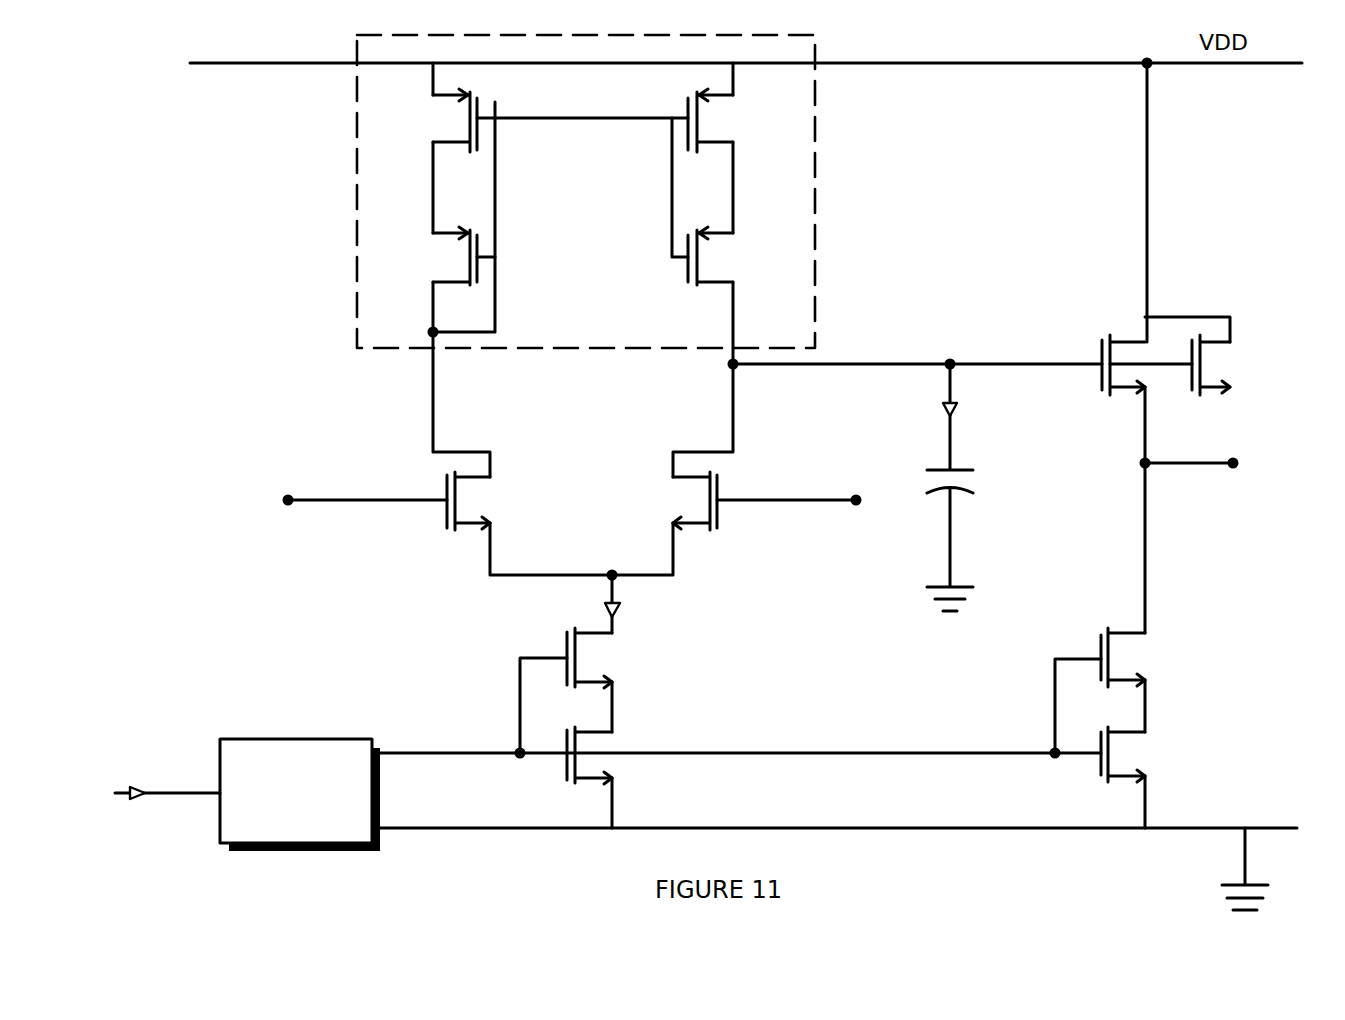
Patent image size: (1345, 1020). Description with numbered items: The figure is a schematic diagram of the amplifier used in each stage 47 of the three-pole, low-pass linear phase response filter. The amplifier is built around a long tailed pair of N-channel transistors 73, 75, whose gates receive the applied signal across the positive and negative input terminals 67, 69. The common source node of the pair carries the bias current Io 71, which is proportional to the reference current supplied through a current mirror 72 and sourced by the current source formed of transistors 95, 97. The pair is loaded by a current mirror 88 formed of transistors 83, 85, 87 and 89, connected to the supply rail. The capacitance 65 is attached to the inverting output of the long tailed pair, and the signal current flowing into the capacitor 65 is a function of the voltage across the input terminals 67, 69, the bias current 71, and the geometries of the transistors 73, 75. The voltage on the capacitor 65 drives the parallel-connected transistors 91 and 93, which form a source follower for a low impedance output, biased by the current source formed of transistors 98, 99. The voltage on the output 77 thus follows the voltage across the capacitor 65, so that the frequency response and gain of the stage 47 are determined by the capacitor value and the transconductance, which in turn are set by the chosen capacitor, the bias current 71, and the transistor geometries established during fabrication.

The filter stage 47 is at (711, 443).
The capacitance 65 is at (973, 478).
The positive input terminal 67 is at (286, 500).
The negative input terminal 69 is at (856, 500).
The bias current 71 is at (606, 603).
The current mirror 72 is at (307, 739).
The transistor 73 is at (487, 497).
The transistor 75 is at (686, 506).
The output 77 is at (1233, 463).
The transistor 83 is at (438, 107).
The transistor 85 is at (438, 245).
The transistor 87 is at (722, 110).
The current mirror 88 is at (815, 213).
The transistor 89 is at (722, 252).
The transistor 91 is at (1100, 334).
The transistor 93 is at (1228, 366).
The transistor 95 is at (605, 660).
The transistor 97 is at (605, 742).
The transistor 98 is at (1140, 652).
The transistor 99 is at (1140, 752).